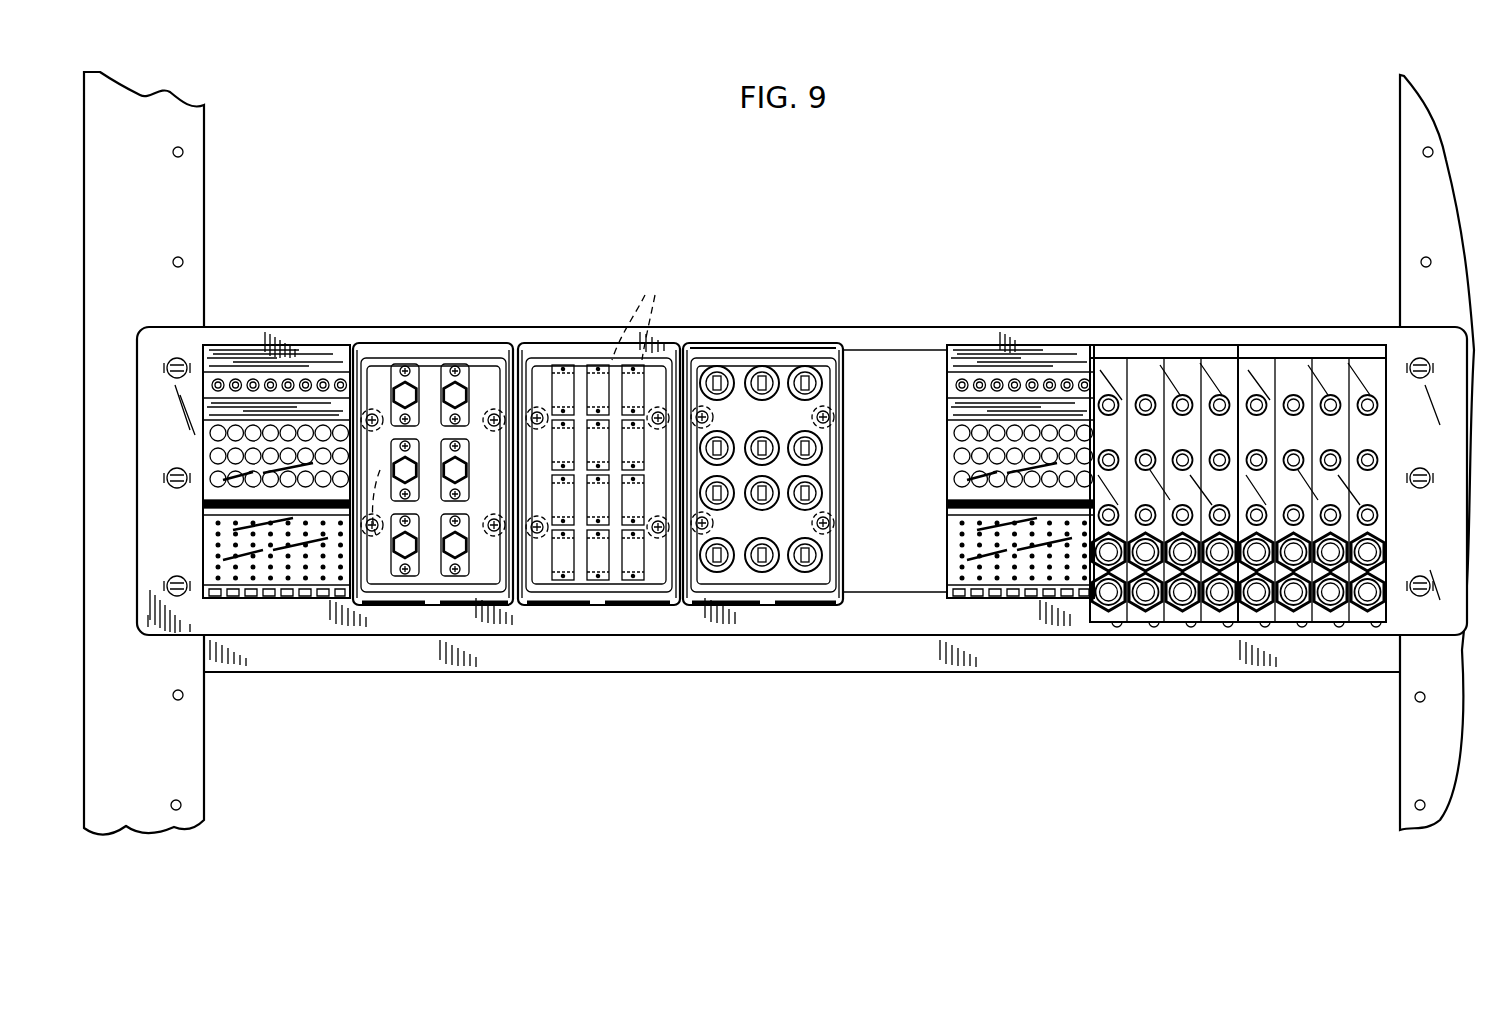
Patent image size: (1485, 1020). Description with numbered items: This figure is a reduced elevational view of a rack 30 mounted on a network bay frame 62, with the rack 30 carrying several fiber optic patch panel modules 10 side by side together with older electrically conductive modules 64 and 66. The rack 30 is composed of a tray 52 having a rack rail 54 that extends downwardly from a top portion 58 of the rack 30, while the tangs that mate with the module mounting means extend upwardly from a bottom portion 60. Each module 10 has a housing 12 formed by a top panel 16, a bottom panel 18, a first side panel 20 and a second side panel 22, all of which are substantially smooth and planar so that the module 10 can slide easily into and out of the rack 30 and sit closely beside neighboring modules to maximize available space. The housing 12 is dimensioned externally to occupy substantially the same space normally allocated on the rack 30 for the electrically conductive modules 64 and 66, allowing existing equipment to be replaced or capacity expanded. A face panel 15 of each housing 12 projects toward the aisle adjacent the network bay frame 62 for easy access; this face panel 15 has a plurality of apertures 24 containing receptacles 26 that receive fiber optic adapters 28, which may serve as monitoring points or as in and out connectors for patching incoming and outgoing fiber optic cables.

The fiber optic patch panel module 10 is at (440, 340).
The housing 12 is at (410, 343).
The face panel 15 is at (372, 592).
The top panel 16 is at (512, 343).
The bottom panel 18 is at (555, 606).
The first side panel 20 is at (522, 372).
The second side panel 22 is at (352, 350).
The apertures 24 is at (418, 710).
The receptacles 26 is at (500, 520).
The fiber optic adapters 28 is at (392, 530).
The rack 30 is at (594, 335).
The tray 52 is at (1066, 676).
The rack rail 54 is at (935, 592).
The top portion 58 is at (838, 345).
The bottom portion 60 is at (898, 606).
The network bay frame 62 is at (207, 216).
The electrically conductive module 64 is at (270, 345).
The electrically conductive module 66 is at (1166, 345).